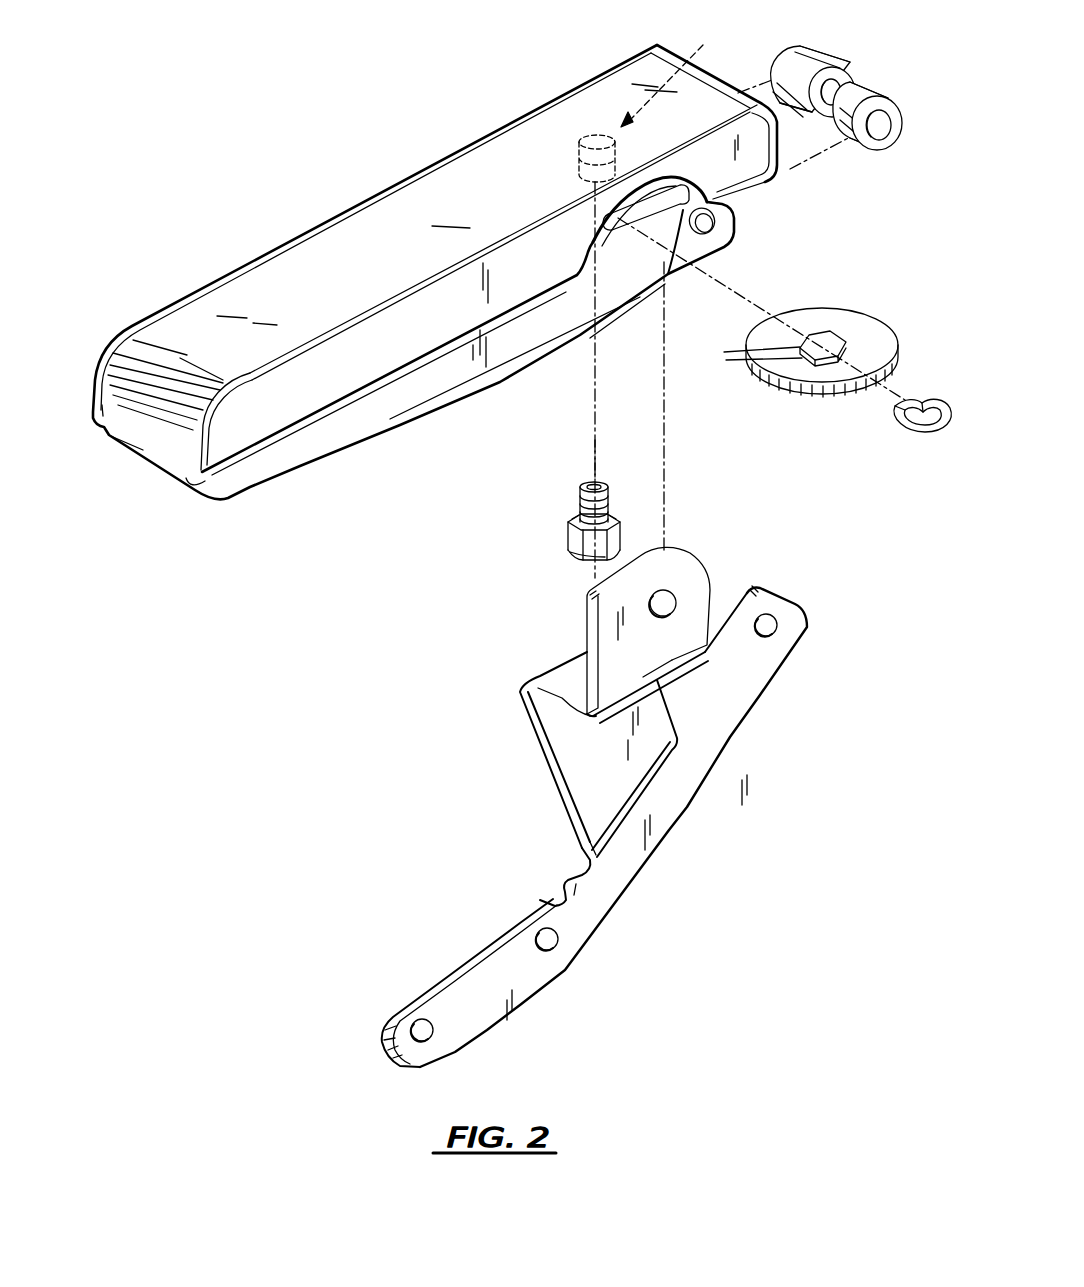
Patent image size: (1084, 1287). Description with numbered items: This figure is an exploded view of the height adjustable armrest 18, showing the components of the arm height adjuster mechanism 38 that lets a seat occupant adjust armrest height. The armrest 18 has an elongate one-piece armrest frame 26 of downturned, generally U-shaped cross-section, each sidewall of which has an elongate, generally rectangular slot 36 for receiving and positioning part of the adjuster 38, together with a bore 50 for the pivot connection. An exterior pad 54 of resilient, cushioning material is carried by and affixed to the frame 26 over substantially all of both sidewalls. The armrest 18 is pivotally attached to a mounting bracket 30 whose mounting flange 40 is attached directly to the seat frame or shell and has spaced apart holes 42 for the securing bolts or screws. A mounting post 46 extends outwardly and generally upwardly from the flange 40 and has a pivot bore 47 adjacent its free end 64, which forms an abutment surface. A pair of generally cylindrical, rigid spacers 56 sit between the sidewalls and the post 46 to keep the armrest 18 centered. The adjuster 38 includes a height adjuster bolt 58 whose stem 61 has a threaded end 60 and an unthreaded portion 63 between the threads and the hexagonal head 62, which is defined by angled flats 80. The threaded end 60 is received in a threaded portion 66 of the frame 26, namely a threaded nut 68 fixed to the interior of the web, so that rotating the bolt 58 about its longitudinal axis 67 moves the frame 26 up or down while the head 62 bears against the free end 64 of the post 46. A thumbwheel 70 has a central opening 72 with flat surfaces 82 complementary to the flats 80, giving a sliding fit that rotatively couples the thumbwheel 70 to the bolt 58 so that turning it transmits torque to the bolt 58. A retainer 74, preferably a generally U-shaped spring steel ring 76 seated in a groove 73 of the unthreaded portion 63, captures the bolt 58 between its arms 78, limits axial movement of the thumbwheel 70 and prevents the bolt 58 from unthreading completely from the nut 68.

The height adjustable armrest 18 is at (499, 322).
The armrest frame 26 is at (738, 211).
The mounting bracket 30 is at (617, 793).
The slot 36 is at (676, 196).
The arm height adjuster mechanism 38 is at (576, 507).
The mounting flange 40 is at (617, 821).
The holes 42 is at (778, 618).
The mounting post 46 is at (627, 735).
The pivot bore 47 is at (673, 600).
The bore 50 is at (716, 227).
The exterior pad 54 is at (470, 227).
The spacers 56 is at (870, 90).
The height adjuster bolt 58 is at (619, 507).
The threaded end 60 is at (589, 471).
The stem 61 is at (598, 480).
The head 62 is at (619, 548).
The unthreaded portion 63 is at (609, 513).
The free end 64 is at (680, 621).
The threaded portion 66 is at (676, 72).
The longitudinal axis 67 is at (591, 452).
The threaded nut 68 is at (583, 128).
The thumbwheel 70 is at (808, 327).
The opening 72 is at (852, 321).
The groove 73 is at (575, 520).
The retainer 74 is at (898, 417).
The ring 76 is at (936, 428).
The arms 78 is at (926, 401).
The angled flats 80 is at (590, 556).
The flat surfaces 82 is at (746, 354).